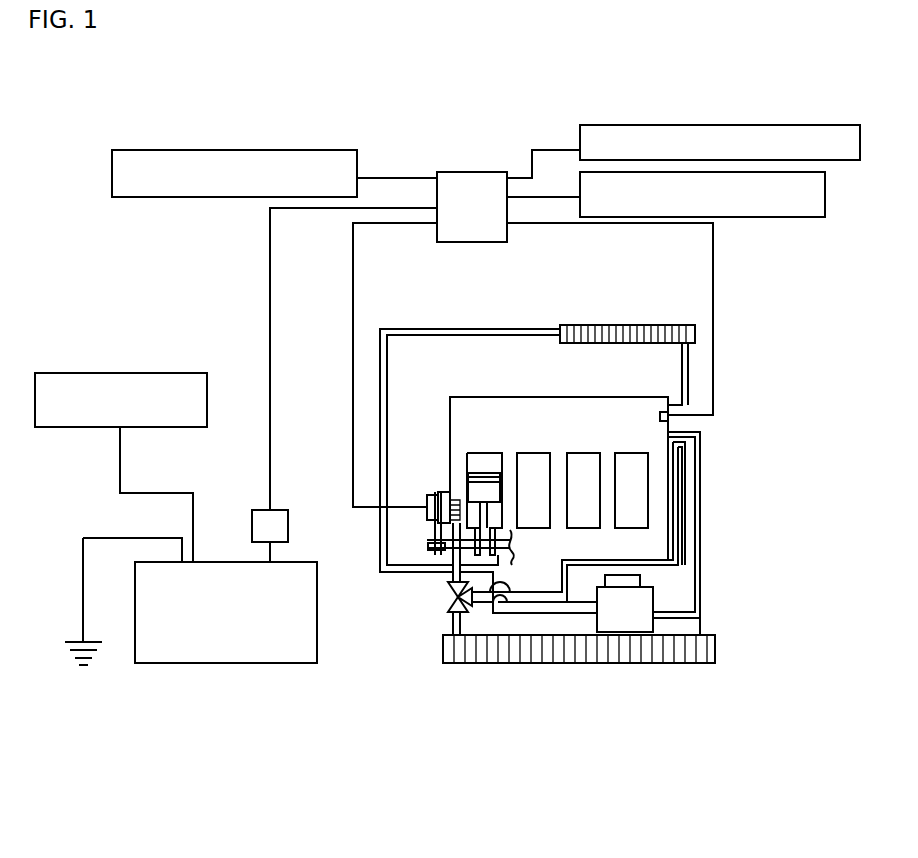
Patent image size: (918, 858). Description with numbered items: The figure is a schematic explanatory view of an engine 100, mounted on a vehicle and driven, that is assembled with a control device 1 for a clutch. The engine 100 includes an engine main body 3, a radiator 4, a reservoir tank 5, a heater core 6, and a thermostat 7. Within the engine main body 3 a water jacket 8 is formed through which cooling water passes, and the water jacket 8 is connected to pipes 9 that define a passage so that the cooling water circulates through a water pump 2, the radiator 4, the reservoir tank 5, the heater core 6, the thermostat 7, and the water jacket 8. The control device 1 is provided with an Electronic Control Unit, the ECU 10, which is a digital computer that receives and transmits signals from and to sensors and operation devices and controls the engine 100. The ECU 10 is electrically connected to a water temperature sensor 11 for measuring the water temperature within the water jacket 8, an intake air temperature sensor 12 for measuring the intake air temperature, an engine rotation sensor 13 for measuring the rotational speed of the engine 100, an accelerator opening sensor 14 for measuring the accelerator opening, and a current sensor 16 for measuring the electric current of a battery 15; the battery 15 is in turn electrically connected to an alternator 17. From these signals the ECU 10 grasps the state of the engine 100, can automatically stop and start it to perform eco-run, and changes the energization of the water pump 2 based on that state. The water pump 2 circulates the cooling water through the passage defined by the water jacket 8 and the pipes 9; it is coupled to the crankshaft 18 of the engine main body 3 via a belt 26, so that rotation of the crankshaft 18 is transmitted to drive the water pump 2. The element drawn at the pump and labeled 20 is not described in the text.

The control device 1 is at (391, 132).
The water pump 2 is at (450, 497).
The engine main body 3 is at (462, 390).
The radiator 4 is at (460, 663).
The reservoir tank 5 is at (648, 602).
The heater core 6 is at (598, 325).
The thermostat 7 is at (450, 600).
The water jacket 8 is at (542, 408).
The pipes 9 is at (380, 395).
The Electronic Control Unit (ECU) 10 is at (467, 242).
The water temperature sensor 11 is at (672, 420).
The intake air temperature sensor 12 is at (743, 217).
The engine rotation sensor 13 is at (732, 125).
The accelerator opening sensor 14 is at (180, 197).
The battery 15 is at (230, 663).
The current sensor 16 is at (252, 517).
The alternator 17 is at (95, 373).
The crankshaft 18 is at (453, 545).
The water pump 20 is at (430, 492).
The belt 26 is at (440, 530).
The engine 100 is at (822, 700).